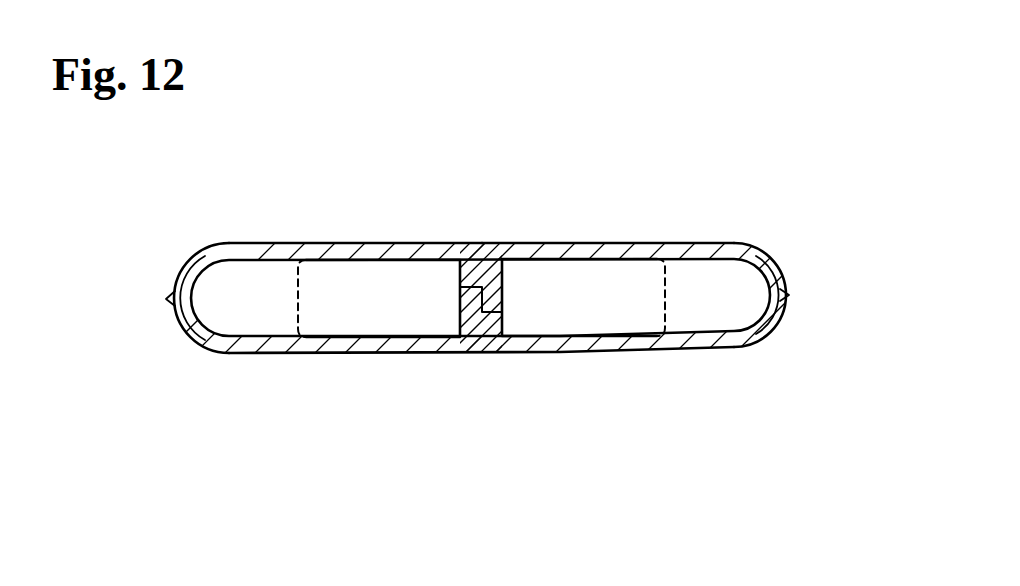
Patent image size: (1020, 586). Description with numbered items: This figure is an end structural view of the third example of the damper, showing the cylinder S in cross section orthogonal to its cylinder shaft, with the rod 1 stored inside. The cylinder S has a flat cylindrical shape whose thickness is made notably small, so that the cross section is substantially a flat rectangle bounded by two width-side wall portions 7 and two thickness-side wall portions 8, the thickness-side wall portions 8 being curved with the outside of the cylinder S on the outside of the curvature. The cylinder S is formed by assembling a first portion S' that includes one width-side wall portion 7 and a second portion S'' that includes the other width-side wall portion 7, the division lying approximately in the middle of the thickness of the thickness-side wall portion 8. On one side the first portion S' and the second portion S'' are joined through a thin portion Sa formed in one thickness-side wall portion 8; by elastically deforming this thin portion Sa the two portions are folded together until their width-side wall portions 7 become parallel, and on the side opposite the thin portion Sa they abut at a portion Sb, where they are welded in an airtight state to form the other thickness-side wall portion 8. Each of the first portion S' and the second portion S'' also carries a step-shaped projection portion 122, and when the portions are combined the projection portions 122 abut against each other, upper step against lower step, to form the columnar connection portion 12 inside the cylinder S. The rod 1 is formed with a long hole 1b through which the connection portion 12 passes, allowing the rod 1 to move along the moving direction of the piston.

The rod 1 is at (610, 275).
The long hole 1b is at (456, 318).
The width-side wall portion 7 is at (567, 243).
The thickness-side wall portion 8 is at (177, 282).
The connection portion 12 is at (477, 333).
The projection portion 122 is at (486, 262).
The cylinder S is at (608, 179).
The first portion S' is at (355, 169).
The second portion S'' is at (481, 405).
The thin portion Sa is at (166, 299).
The abutting portion Sb is at (788, 298).